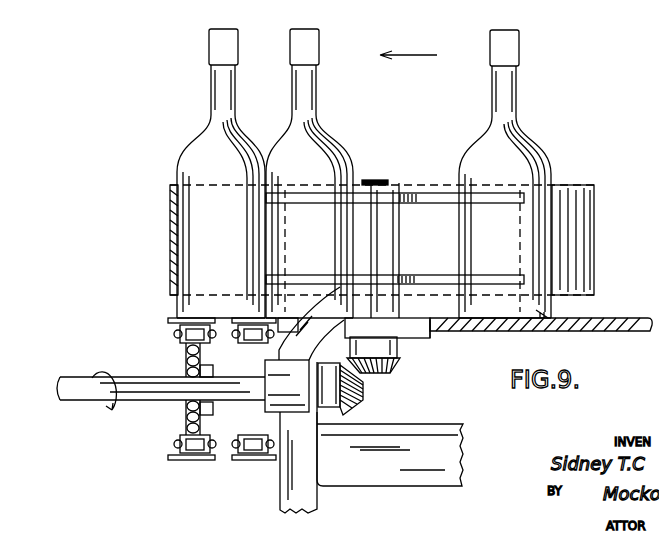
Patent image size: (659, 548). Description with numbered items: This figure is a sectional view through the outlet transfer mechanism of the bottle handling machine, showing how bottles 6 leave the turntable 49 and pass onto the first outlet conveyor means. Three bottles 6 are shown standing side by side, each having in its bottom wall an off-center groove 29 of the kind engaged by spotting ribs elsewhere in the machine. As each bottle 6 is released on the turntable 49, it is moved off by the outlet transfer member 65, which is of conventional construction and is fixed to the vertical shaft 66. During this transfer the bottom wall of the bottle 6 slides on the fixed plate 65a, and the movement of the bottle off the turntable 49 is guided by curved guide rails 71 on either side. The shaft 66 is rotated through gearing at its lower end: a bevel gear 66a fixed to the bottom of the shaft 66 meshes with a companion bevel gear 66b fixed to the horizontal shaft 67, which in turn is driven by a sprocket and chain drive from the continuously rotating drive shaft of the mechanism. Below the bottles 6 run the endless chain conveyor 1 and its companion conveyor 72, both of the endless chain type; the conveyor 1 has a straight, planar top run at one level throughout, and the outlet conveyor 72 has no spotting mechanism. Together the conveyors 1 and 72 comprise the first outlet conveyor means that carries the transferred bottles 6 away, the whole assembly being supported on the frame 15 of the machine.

The endless chain conveyor 1 is at (245, 350).
The bottle 6 is at (288, 124).
The frame 15 is at (458, 437).
The groove 29 is at (285, 318).
The turntable 49 is at (626, 319).
The outlet transfer member 65 is at (416, 192).
The fixed plate 65a is at (430, 338).
The shaft 66 is at (372, 182).
The bevel gear 66a is at (400, 364).
The companion bevel gear 66b is at (362, 406).
The horizontal shaft 67 is at (94, 377).
The curved guide rail 71 is at (170, 192).
The companion conveyor 72 is at (171, 332).